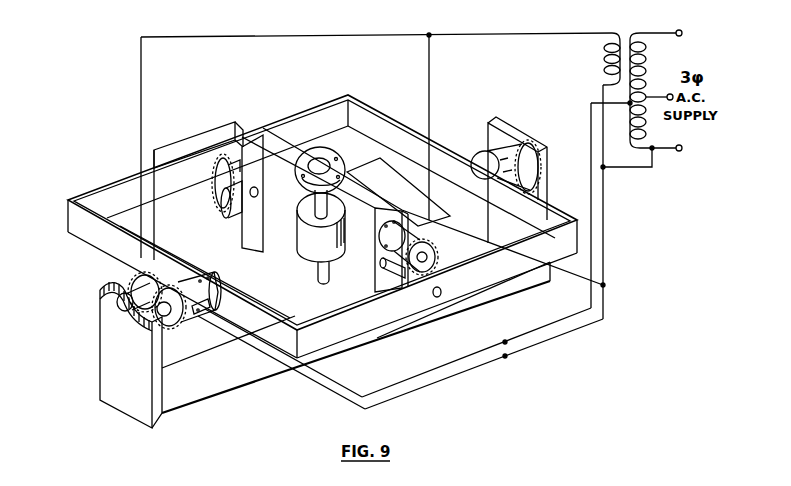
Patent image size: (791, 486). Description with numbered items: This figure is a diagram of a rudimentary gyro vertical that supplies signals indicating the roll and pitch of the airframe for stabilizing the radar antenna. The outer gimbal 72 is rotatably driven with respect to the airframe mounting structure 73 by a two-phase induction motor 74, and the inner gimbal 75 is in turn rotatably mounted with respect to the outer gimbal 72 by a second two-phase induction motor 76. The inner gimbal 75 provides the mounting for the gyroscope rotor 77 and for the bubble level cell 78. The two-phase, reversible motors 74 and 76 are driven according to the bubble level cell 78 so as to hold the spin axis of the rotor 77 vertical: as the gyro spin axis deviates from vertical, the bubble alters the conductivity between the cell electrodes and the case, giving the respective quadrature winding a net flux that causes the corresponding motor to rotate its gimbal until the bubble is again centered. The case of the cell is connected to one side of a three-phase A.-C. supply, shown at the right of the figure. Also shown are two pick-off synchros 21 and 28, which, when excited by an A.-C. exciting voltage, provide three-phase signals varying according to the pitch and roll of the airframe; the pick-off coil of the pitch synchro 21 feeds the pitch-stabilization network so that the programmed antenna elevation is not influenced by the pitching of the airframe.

The pick-off synchro 21 is at (235, 205).
The pick-off synchro 28 is at (486, 160).
The outer gimbal 72 is at (378, 128).
The airframe mounting structure 73 is at (229, 379).
The two-phase induction motor 74 is at (188, 323).
The inner gimbal 75 is at (252, 228).
The two-phase induction motor 76 is at (420, 233).
The gyroscope rotor 77 is at (298, 228).
The bubble level cell 78 is at (330, 161).